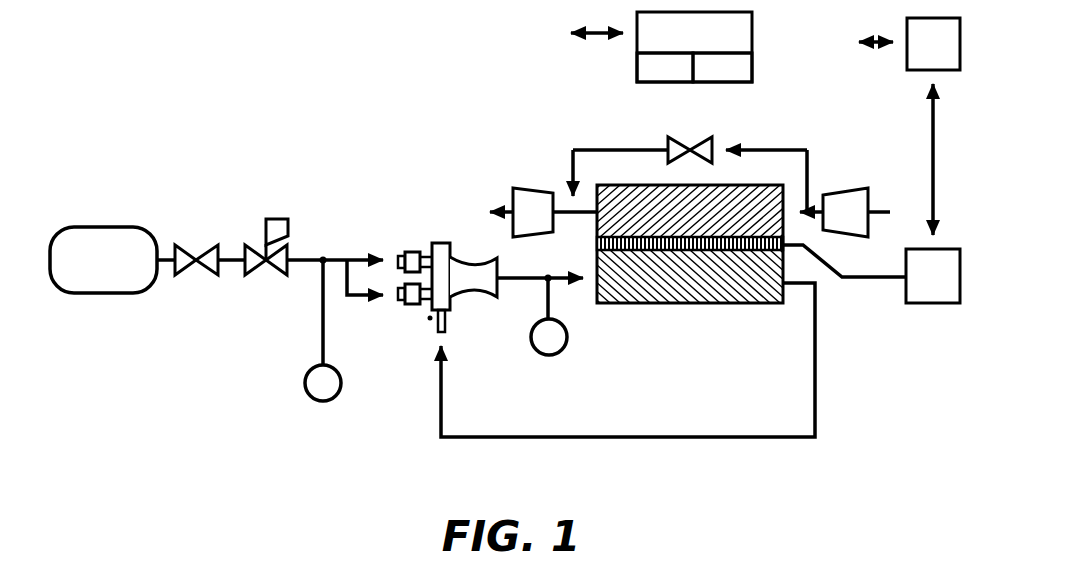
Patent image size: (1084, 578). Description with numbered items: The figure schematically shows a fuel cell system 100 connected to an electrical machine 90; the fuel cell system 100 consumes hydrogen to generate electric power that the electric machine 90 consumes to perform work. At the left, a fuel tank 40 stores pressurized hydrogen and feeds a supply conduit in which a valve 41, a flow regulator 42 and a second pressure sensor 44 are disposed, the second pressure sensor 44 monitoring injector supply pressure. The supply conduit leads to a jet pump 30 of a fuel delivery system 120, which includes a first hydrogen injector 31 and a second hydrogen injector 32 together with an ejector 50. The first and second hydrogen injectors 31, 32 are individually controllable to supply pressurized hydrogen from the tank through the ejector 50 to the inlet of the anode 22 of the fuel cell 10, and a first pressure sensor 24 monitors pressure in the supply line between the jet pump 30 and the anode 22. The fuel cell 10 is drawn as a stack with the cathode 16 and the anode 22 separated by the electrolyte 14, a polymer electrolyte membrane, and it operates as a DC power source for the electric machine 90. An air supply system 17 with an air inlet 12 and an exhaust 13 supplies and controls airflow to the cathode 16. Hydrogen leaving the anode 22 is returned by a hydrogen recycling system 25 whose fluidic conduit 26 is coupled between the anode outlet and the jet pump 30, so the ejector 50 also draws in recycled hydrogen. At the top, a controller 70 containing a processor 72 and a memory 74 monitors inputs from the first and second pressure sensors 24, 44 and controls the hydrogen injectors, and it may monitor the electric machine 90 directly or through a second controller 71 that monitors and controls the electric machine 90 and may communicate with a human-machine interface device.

The fuel cell 10 is at (723, 238).
The air inlet 12 is at (918, 224).
The exhaust 13 is at (501, 212).
The electrolyte 14 is at (787, 253).
The cathode 16 is at (787, 197).
The air supply system 17 is at (811, 142).
The anode 22 is at (687, 304).
The first pressure sensor 24 is at (567, 346).
The hydrogen recycling system 25 is at (771, 443).
The fluidic conduit 26 is at (733, 435).
The jet pump 30 is at (430, 319).
The first hydrogen injector 31 is at (412, 305).
The second hydrogen injector 32 is at (412, 251).
The fuel tank 40 is at (117, 273).
The valve 41 is at (205, 268).
The flow regulator 42 is at (272, 268).
The second pressure sensor 44 is at (306, 393).
The ejector 50 is at (473, 293).
The controller 70 is at (689, 49).
The second controller 71 is at (920, 56).
The processor 72 is at (636, 70).
The memory 74 is at (753, 68).
The electrical machine 90 is at (920, 288).
The fuel cell system 100 is at (522, 161).
The fuel delivery system 120 is at (366, 186).